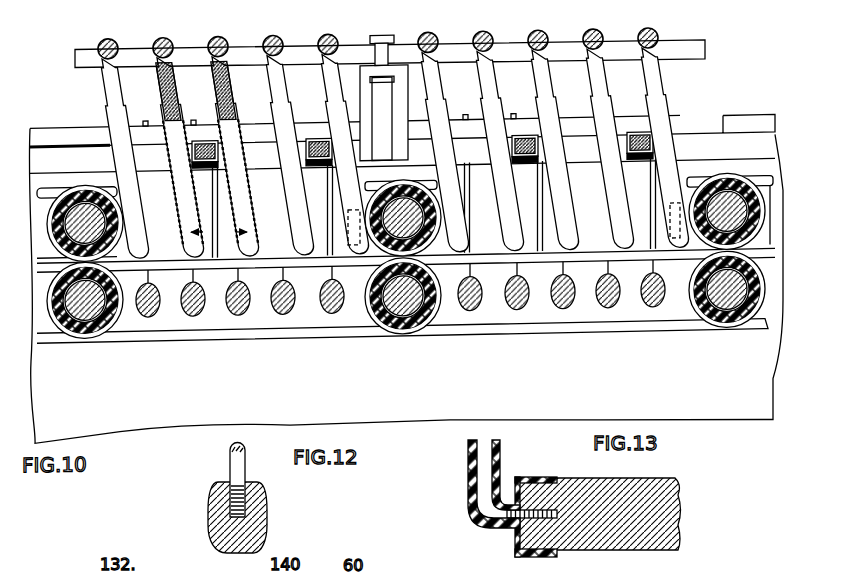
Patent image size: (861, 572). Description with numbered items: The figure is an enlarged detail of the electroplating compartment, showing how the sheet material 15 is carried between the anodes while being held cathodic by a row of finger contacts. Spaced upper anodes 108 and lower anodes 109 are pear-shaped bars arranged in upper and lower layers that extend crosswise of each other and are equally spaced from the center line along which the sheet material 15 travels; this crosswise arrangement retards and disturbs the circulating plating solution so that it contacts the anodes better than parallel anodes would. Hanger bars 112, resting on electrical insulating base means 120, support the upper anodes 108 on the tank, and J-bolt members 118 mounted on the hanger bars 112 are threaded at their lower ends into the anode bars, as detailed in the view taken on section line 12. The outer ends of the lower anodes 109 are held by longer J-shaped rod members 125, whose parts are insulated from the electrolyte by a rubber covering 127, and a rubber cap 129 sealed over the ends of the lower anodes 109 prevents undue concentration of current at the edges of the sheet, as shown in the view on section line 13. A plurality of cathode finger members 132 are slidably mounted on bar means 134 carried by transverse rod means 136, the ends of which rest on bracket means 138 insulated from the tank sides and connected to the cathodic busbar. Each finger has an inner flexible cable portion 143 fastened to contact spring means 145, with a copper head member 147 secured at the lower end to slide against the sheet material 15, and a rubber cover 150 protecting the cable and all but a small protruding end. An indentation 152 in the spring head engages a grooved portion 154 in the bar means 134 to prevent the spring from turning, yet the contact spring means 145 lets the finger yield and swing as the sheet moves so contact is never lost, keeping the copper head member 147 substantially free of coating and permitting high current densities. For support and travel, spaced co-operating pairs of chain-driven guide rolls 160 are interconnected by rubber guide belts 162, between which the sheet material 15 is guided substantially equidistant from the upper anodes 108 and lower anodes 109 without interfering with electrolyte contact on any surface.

In FIG. 10, the section line 12- 12 is at (345, 199).
In FIG. 10, the section line 13- 13 is at (580, 281).
In FIG. 10, the sheet material 15 is at (219, 264).
In FIG. 10, the upper anode 108 is at (216, 216).
In FIG. 12, the upper anode 108 is at (266, 507).
In FIG. 10, the lower anode 109 is at (244, 316).
In FIG. 13, the lower anode 109 is at (583, 478).
In FIG. 10, the hanger bar 112 is at (317, 142).
In FIG. 12, the J-bolt member 118 is at (246, 458).
In FIG. 10, the electrical insulating base means 120 is at (587, 180).
In FIG. 13, the J-shaped rod member 125 is at (486, 469).
In FIG. 13, the rubber covering 127 is at (500, 453).
In FIG. 13, the rubber cap 129 is at (541, 477).
In FIG. 10, the cathode finger member 132 is at (550, 119).
In FIG. 10, the bar means 134 is at (230, 41).
In FIG. 10, the transverse rod means 136 is at (712, 49).
In FIG. 10, the bracket means 138 is at (399, 96).
In FIG. 10, the flexible cable portion 143 is at (214, 98).
In FIG. 10, the contact spring means 145 is at (215, 59).
In FIG. 10, the copper head member 147 is at (219, 232).
In FIG. 10, the rubber cover 150 is at (258, 209).
In FIG. 10, the indentation 152 is at (217, 40).
In FIG. 10, the grooved portion 154 is at (224, 42).
In FIG. 10, the guide roll 160 is at (95, 338).
In FIG. 10, the rubber guide belt 162 is at (48, 225).